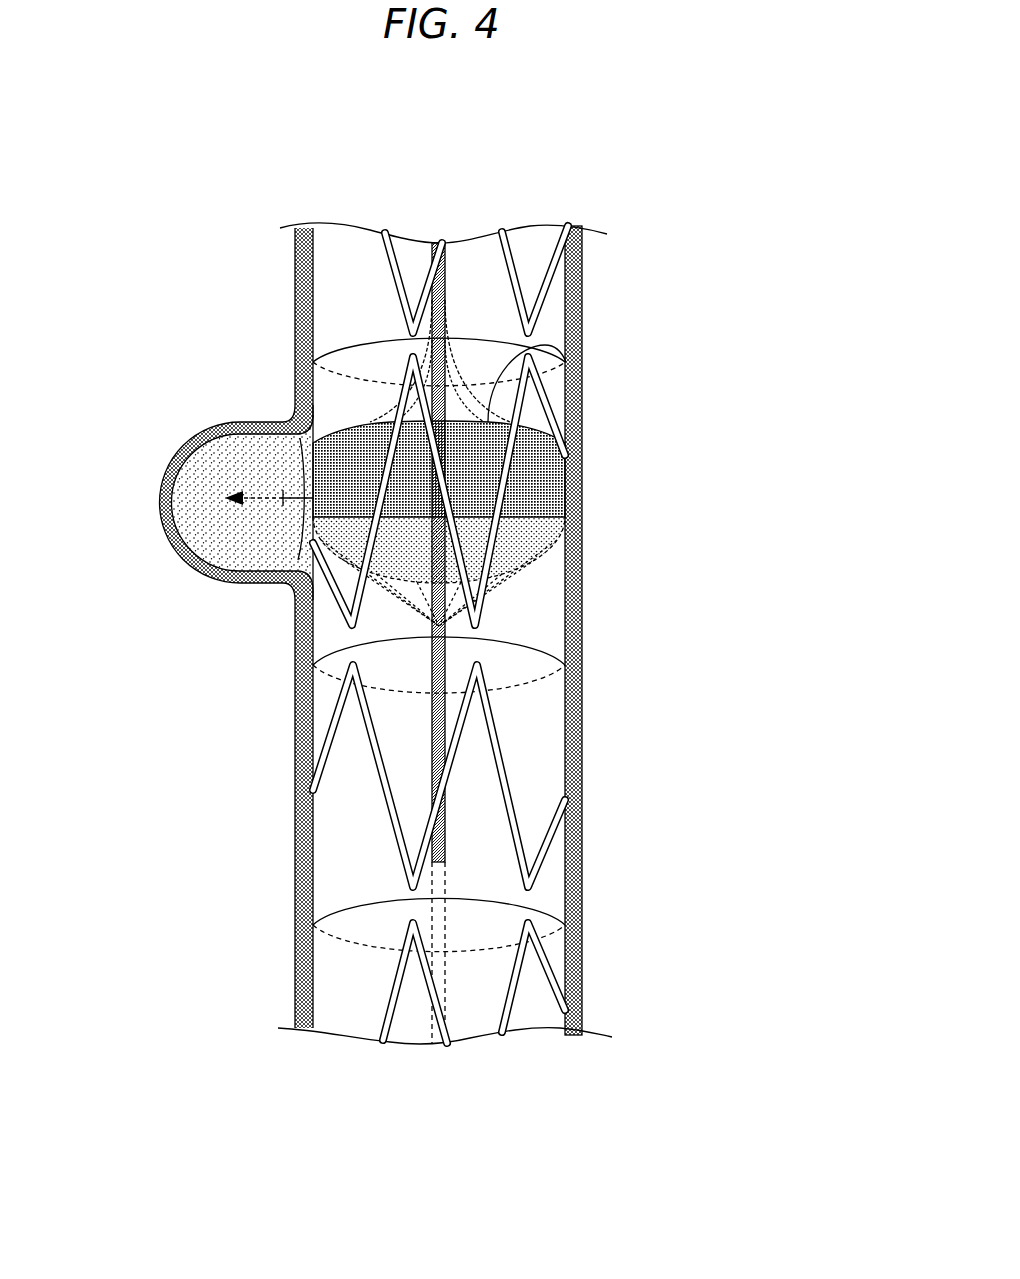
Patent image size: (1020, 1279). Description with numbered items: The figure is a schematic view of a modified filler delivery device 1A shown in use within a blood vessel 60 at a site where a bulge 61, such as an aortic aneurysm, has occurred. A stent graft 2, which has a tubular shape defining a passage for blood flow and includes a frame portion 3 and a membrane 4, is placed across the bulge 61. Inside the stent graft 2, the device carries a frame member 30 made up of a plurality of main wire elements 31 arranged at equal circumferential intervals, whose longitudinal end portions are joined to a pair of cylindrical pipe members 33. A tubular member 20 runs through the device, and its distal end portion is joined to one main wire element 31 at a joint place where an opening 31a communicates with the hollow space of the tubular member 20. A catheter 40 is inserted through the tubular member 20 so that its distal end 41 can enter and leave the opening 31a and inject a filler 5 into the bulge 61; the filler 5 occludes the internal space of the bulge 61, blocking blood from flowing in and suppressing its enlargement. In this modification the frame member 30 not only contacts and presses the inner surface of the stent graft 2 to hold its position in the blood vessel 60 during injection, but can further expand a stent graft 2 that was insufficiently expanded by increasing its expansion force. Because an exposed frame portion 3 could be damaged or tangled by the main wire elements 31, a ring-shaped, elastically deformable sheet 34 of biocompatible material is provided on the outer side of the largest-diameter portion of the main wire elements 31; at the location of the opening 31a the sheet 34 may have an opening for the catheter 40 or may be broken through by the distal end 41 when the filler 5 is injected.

The filler delivery device 1A is at (634, 416).
The stent graft 2 is at (538, 854).
The frame portion 3 is at (562, 840).
The membrane 4 is at (527, 752).
The filler 5 is at (213, 472).
The tubular member 20 is at (440, 968).
The frame member 30 is at (598, 522).
The main wire element 31 is at (540, 578).
The opening 31a is at (287, 420).
The cylindrical pipe member 33 is at (447, 282).
The ring-shaped sheet 34 is at (565, 340).
The catheter 40 is at (297, 545).
The distal end 41 is at (293, 493).
The blood vessel 60 is at (565, 950).
The bulge 61 is at (163, 538).